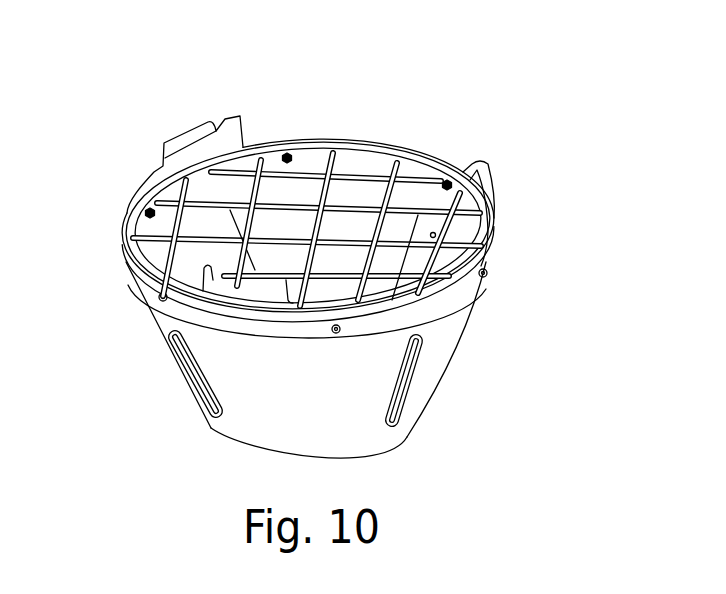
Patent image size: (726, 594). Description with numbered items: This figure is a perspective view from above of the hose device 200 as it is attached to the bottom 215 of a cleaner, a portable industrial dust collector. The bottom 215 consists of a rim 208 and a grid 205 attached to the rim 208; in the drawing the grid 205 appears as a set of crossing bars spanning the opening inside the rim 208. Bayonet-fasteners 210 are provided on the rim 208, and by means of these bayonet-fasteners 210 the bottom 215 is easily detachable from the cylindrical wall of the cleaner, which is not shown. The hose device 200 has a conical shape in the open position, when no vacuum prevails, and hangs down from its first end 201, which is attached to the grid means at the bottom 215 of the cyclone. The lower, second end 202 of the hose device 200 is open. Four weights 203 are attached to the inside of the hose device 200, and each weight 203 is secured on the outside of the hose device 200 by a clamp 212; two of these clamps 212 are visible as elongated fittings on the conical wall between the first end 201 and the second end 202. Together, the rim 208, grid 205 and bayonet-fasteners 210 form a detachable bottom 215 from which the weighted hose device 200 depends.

The hose device 200 is at (443, 343).
The first end 201 is at (465, 304).
The second end 202 is at (377, 457).
The weights 203 is at (208, 228).
The grid 205 is at (323, 195).
The rim 208 is at (300, 153).
The bayonet-fasteners 210 is at (188, 131).
The clamp 212 is at (403, 388).
The bottom 215 is at (522, 196).